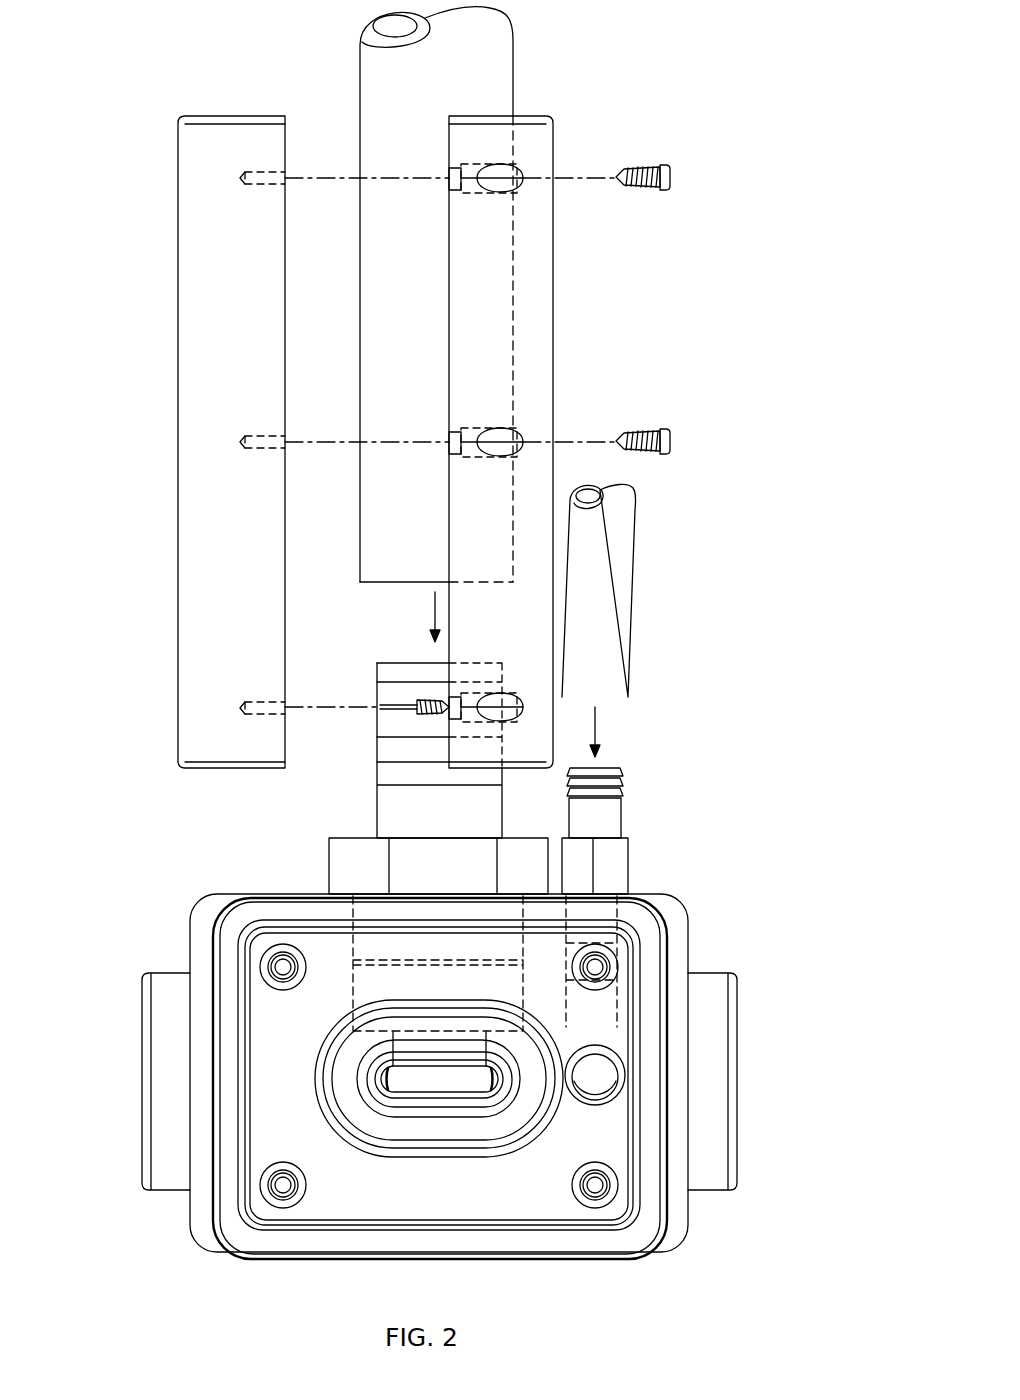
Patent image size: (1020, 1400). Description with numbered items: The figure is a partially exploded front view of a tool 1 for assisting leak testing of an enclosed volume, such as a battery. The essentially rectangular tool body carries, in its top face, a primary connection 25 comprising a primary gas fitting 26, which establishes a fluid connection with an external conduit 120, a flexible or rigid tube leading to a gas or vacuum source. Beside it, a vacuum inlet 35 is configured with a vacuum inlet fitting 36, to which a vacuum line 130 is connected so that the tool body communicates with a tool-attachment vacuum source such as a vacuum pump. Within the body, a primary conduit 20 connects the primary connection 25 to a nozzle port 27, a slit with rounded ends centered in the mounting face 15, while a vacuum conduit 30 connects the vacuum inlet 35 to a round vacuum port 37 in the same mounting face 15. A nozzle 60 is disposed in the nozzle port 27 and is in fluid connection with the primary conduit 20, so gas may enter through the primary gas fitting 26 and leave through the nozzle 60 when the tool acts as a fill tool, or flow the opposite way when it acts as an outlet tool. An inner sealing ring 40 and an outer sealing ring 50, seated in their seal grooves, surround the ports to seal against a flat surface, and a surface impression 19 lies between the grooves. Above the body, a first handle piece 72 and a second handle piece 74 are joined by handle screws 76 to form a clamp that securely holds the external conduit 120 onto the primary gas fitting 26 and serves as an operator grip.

The tool 1 is at (92, 99).
The external conduit 120 is at (513, 72).
The vacuum line 130 is at (628, 640).
The first handle piece 72 is at (553, 282).
The second handle piece 74 is at (190, 276).
The handle screws 76 is at (670, 177).
The primary gas fitting 26 is at (376, 774).
The primary connection 25 is at (433, 892).
The vacuum inlet 35 is at (618, 896).
The vacuum inlet fitting 36 is at (604, 798).
The mounting face 15 is at (298, 1072).
The outer sealing ring 50 is at (332, 1242).
The surface impression 19 is at (540, 1205).
The primary conduit 20 is at (353, 990).
The vacuum conduit 30 is at (617, 1020).
The inner sealing ring 40 is at (350, 1099).
The nozzle 60 is at (415, 1100).
The nozzle port 27 is at (458, 1075).
The vacuum port 37 is at (598, 1082).